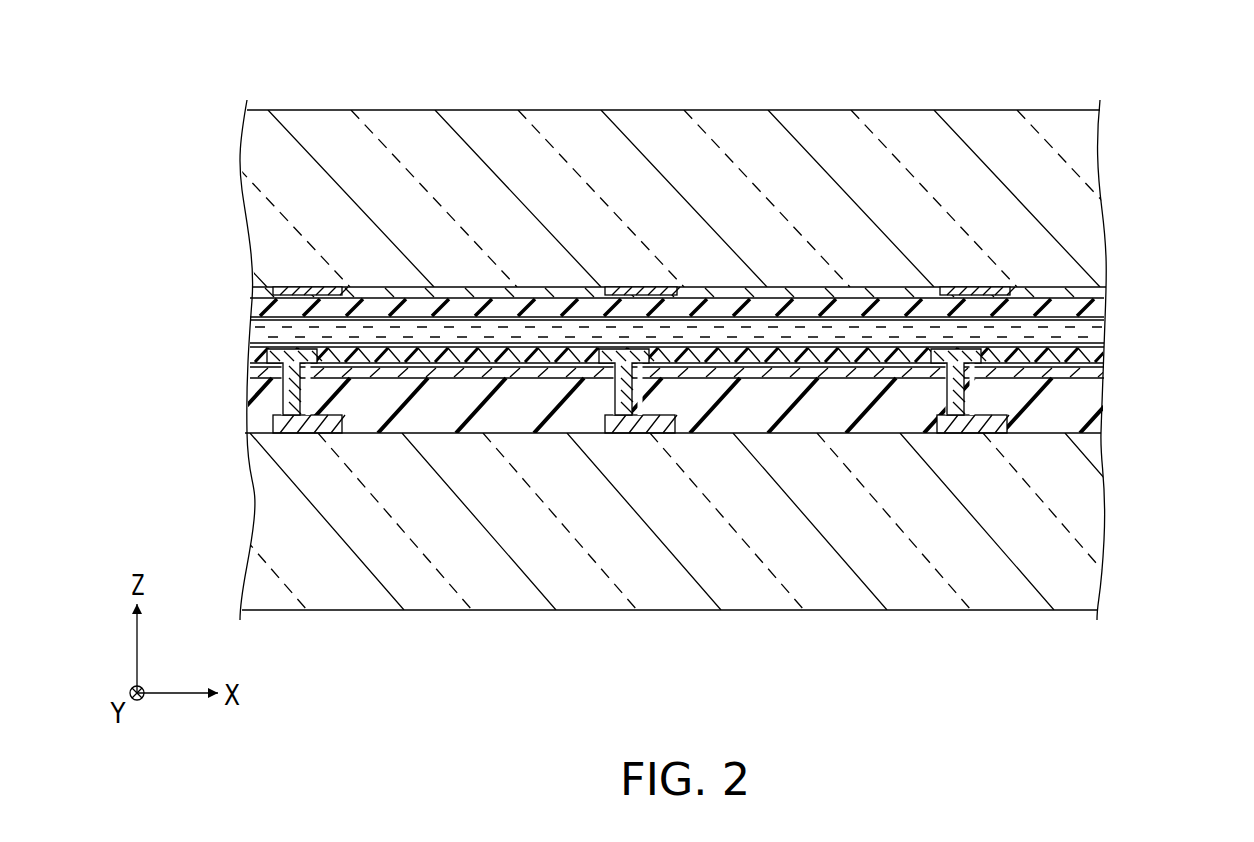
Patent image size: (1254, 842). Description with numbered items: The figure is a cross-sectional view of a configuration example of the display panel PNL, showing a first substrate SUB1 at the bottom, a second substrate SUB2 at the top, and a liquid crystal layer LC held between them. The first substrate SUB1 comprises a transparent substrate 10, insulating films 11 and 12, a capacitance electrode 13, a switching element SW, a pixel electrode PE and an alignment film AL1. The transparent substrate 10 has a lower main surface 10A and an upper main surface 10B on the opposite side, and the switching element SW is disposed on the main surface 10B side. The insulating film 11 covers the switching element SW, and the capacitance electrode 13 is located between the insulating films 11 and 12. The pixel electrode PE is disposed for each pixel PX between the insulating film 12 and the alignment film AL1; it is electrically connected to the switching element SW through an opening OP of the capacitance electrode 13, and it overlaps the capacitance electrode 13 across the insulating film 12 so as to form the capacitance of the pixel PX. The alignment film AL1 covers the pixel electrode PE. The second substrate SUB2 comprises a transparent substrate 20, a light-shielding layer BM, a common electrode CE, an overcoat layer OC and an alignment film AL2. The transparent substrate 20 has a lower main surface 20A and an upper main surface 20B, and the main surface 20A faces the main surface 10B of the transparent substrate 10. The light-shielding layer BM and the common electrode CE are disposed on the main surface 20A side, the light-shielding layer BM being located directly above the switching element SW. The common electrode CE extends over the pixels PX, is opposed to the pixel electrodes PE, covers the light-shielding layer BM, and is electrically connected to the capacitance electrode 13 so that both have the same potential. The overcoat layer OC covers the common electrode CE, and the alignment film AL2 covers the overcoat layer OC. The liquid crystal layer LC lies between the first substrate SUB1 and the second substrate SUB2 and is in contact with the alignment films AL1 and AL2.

The display panel PNL is at (1082, 106).
The second substrate SUB2 is at (1118, 220).
The first substrate SUB1 is at (1118, 500).
The transparent substrate 20 is at (258, 158).
The main surface (lower surface) 20A is at (819, 290).
The main surface (upper surface) 20B is at (894, 108).
The transparent substrate 10 is at (255, 540).
The main surface (lower surface) 10A is at (883, 613).
The main surface (upper surface) 10B is at (801, 431).
The light-shielding layer BM is at (305, 287).
The overcoat layer OC is at (1092, 307).
The common electrode CE is at (1104, 290).
The alignment film AL2 is at (1082, 322).
The liquid crystal layer LC is at (1103, 342).
The alignment film AL1 is at (252, 335).
The insulating film 12 is at (250, 352).
The capacitance electrode 13 is at (250, 376).
The insulating film 11 is at (258, 423).
The opening OP is at (275, 393).
The pixel electrode PE is at (470, 349).
The switching element SW is at (288, 433).
The pixel PX is at (510, 408).